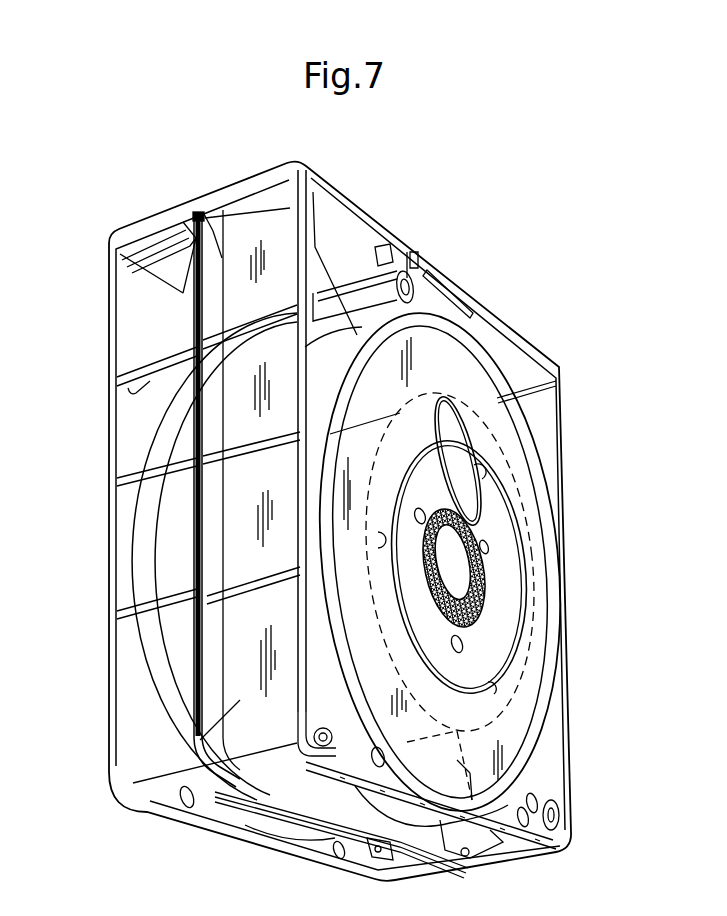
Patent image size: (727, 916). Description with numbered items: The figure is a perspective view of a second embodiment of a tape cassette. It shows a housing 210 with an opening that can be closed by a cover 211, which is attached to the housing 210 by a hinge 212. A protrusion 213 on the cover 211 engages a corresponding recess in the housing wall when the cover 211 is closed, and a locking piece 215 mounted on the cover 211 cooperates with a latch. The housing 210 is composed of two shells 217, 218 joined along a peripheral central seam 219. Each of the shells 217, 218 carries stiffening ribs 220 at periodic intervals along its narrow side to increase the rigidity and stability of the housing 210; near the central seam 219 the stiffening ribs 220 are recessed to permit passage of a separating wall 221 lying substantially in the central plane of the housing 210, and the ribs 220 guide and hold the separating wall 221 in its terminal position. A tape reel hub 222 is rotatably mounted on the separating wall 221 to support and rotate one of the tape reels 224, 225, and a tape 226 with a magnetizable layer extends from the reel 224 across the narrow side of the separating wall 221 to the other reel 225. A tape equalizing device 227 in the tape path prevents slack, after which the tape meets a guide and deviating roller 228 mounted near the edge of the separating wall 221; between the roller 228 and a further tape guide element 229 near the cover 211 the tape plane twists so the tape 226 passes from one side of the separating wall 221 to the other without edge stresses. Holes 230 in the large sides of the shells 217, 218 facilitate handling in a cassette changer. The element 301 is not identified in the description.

The housing 210 is at (562, 458).
The cover 211 is at (510, 353).
The hinge 212 is at (143, 255).
The protrusion 213 is at (453, 292).
The locking piece 215 is at (392, 250).
The shell 217 is at (137, 750).
The shell 218 is at (553, 510).
The central seam 219 is at (197, 212).
The stiffening ribs 220 is at (233, 328).
The separating wall 221 is at (213, 407).
The tape reel hub 222 is at (498, 600).
The tape reel 224 is at (523, 727).
The tape reel 225 is at (143, 532).
The tape 226 is at (240, 687).
The tape equalizing device 227 is at (483, 848).
The guide and deviating roller 228 is at (330, 746).
The tape guide element 229 is at (213, 230).
The holes 230 is at (183, 812).
The blade 301 is at (450, 396).